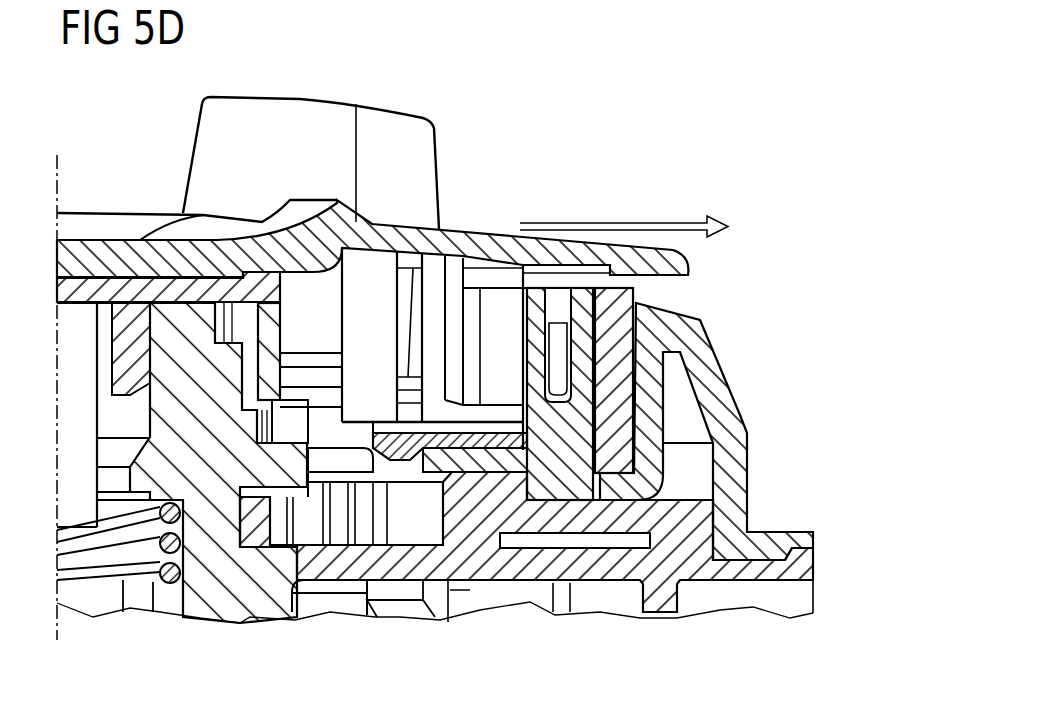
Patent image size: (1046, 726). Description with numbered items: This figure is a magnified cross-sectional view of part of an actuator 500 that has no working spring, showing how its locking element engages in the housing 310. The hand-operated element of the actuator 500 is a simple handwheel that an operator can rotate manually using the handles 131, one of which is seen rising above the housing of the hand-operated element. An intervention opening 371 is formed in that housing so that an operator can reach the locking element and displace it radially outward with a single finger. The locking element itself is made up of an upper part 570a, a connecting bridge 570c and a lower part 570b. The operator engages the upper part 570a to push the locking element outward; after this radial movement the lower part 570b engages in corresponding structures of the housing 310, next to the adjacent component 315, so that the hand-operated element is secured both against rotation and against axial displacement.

The actuator 500 is at (829, 166).
The handle 131 is at (307, 98).
The intervention opening 371 is at (127, 223).
The housing 310 is at (337, 568).
The upper part 570a is at (458, 222).
The lower part 570b is at (477, 455).
The connecting bridge 570c is at (447, 333).
The retaining bracket 315 is at (707, 380).